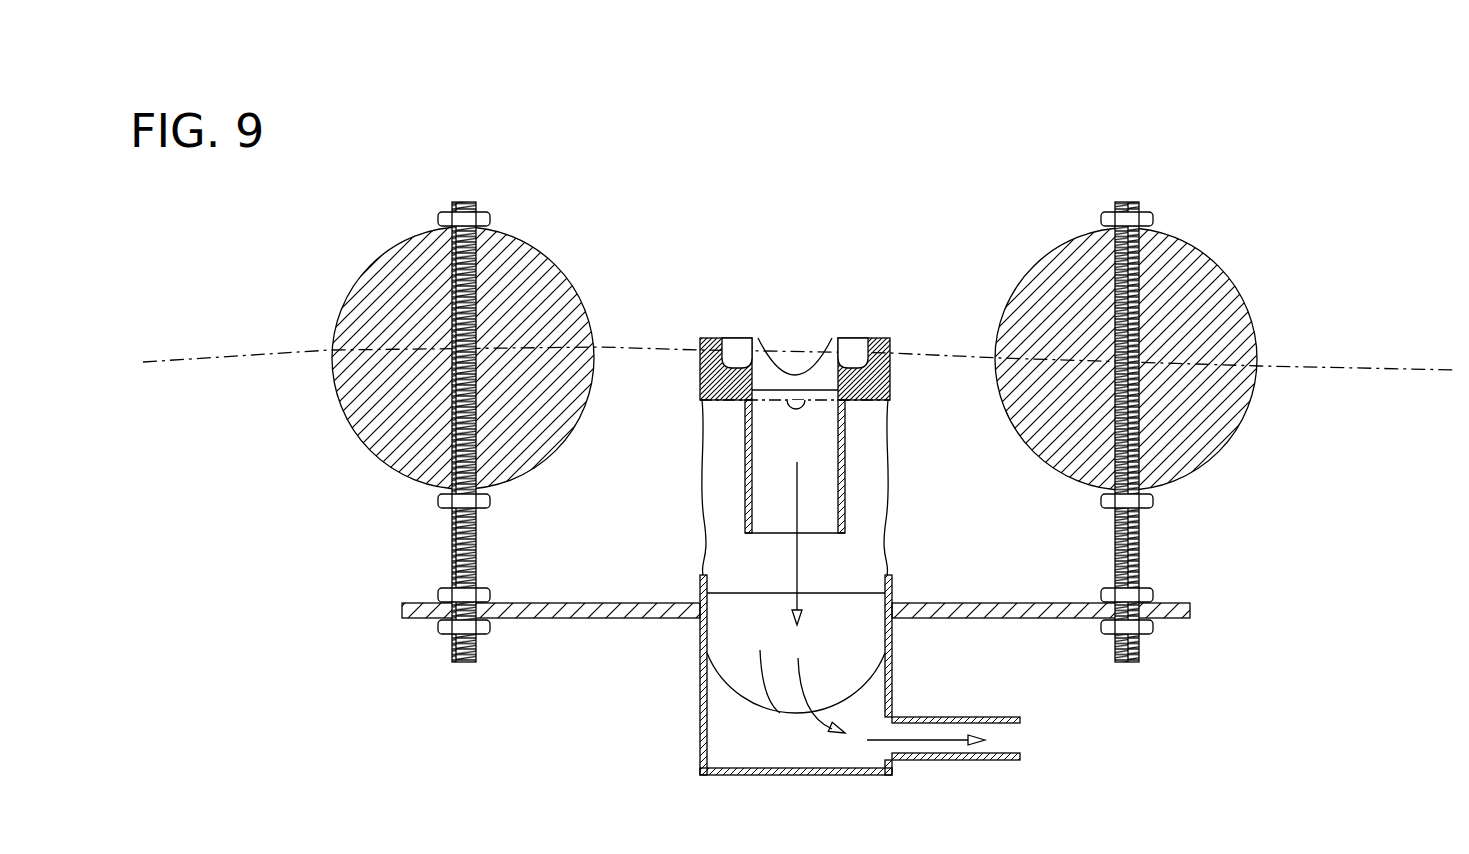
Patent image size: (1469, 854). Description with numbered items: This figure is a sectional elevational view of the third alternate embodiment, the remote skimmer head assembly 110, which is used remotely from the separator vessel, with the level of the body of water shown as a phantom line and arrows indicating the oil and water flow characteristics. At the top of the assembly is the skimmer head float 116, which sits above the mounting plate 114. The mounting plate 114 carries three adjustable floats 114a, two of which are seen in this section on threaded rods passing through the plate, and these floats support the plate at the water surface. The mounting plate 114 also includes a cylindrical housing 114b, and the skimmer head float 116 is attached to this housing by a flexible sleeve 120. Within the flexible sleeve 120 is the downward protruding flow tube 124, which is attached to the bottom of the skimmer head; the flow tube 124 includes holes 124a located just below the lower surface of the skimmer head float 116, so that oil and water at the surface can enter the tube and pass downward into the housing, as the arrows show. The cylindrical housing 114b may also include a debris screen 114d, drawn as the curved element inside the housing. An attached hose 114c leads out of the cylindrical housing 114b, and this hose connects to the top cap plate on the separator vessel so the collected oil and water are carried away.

The remote skimmer head assembly 110 is at (792, 95).
The mounting plate 114 is at (595, 617).
The adjustable floats 114a is at (347, 323).
The cylindrical housing 114b is at (702, 715).
The hose 114c is at (962, 715).
The debris screen 114d is at (796, 597).
The skimmer head float 116 is at (718, 340).
The flexible sleeve 120 is at (700, 477).
The flow tube 124 is at (843, 442).
The holes 124a is at (790, 403).